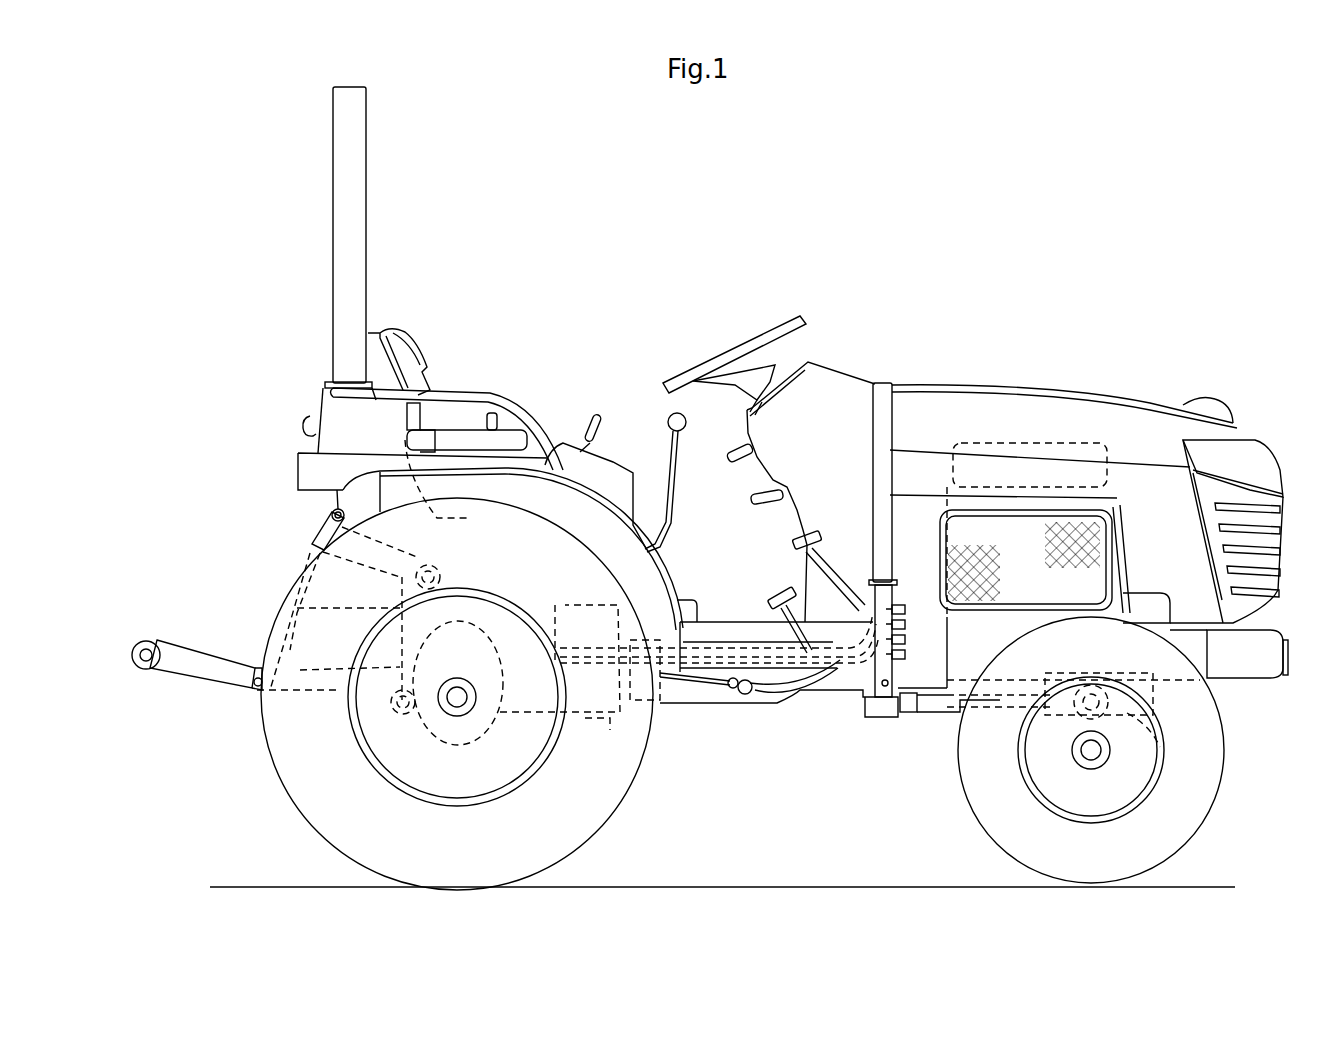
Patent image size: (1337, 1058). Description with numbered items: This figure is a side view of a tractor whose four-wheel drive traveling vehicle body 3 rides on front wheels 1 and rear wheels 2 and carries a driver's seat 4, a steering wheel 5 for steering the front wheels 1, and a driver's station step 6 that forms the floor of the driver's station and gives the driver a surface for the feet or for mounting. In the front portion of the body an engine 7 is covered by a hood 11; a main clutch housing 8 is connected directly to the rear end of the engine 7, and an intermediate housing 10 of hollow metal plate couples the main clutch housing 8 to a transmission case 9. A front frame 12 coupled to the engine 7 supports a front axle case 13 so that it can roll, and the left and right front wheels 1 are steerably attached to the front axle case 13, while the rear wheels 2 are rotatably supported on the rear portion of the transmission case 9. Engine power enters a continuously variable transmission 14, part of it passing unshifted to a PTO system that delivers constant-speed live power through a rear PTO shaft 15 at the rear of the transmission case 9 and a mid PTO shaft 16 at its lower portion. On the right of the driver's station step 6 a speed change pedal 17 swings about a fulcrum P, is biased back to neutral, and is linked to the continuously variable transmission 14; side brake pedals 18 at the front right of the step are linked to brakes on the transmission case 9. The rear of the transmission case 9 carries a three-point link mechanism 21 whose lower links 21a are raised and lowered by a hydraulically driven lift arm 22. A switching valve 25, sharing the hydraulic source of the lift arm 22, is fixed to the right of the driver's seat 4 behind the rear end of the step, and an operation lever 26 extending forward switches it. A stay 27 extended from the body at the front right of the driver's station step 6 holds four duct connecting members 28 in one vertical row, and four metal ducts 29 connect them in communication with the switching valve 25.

The front wheels 1 is at (1207, 805).
The rear wheels 2 is at (283, 808).
The traveling vehicle body 3 is at (897, 310).
The driver's seat 4 is at (425, 356).
The steering wheel 5 is at (755, 345).
The driver's station step 6 is at (767, 630).
The engine 7 is at (1033, 445).
The main clutch housing 8 is at (917, 712).
The transmission case 9 is at (518, 732).
The intermediate housing 10 is at (762, 705).
The hood 11 is at (1073, 392).
The front frame 12 is at (1250, 680).
The front axle case 13 is at (1158, 748).
The continuously variable transmission 14 is at (655, 705).
The rear PTO shaft 15 is at (355, 648).
The mid PTO shaft 16 is at (598, 720).
The speed change pedal 17 is at (783, 587).
The side brake pedals 18 is at (808, 530).
The three-point link mechanism 21 is at (197, 662).
The lower links 21a is at (203, 678).
The lift arm 22 is at (318, 548).
The switching valve 25 is at (457, 681).
The operation lever 26 is at (668, 418).
The stay 27 is at (893, 590).
The duct connecting members 28 is at (905, 609).
The metal ducts 29 is at (717, 622).
The fulcrum P is at (727, 700).